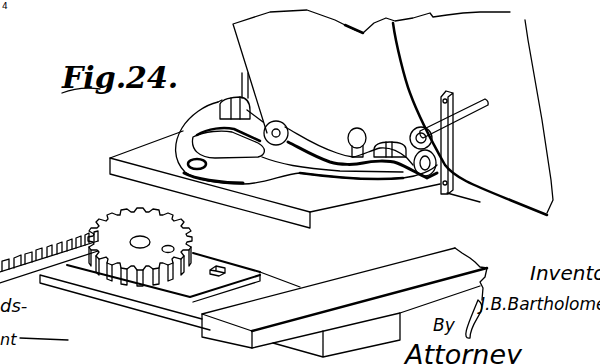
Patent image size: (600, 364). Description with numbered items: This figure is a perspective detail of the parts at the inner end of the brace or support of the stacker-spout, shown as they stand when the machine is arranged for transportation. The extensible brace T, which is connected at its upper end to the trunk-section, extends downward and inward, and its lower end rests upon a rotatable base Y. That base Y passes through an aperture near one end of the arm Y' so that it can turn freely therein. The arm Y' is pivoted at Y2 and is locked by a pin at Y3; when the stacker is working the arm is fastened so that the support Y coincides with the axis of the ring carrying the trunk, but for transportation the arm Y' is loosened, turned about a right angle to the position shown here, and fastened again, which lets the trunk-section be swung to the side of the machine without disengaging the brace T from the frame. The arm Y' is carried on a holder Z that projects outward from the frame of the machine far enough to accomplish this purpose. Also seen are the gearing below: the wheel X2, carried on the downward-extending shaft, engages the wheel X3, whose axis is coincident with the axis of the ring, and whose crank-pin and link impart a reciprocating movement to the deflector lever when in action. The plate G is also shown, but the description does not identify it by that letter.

The plate G is at (393, 112).
The holder Z is at (190, 124).
The rotatable base Y is at (361, 171).
The pivot Y2 is at (279, 126).
The locking pin Y3 is at (352, 128).
The arm Y' is at (390, 137).
The extensible brace T is at (449, 138).
The wheel X3 is at (140, 247).
The wheel X2 is at (49, 248).